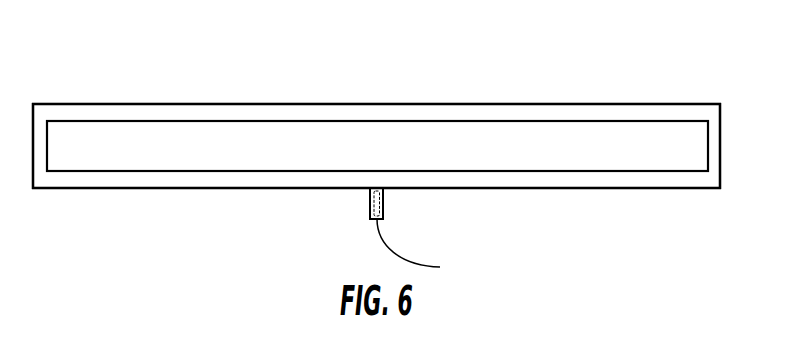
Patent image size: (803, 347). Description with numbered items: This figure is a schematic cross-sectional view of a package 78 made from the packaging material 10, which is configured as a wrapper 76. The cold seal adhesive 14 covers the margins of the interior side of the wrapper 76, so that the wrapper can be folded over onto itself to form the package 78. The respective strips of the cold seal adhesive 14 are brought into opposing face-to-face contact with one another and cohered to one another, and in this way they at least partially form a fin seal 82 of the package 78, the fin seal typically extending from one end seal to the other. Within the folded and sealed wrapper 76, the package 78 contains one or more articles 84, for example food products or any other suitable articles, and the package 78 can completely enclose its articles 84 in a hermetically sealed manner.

The packaging material 10 is at (181, 98).
The wrapper 76 is at (376, 146).
The package 78 is at (376, 146).
The articles 84 is at (383, 138).
The fin seal 82 is at (352, 206).
The cold seal adhesive 14 is at (420, 251).